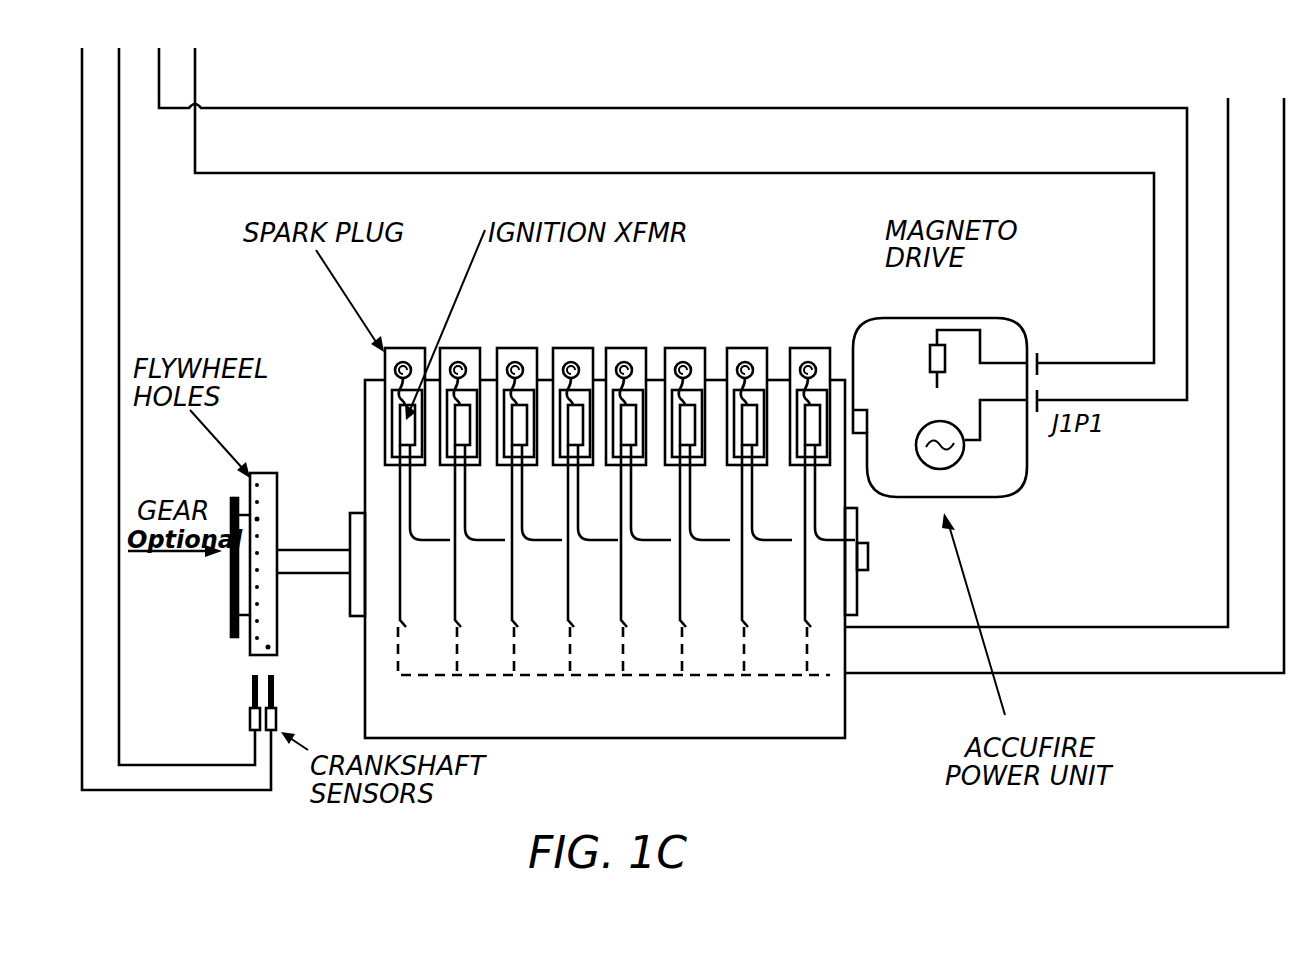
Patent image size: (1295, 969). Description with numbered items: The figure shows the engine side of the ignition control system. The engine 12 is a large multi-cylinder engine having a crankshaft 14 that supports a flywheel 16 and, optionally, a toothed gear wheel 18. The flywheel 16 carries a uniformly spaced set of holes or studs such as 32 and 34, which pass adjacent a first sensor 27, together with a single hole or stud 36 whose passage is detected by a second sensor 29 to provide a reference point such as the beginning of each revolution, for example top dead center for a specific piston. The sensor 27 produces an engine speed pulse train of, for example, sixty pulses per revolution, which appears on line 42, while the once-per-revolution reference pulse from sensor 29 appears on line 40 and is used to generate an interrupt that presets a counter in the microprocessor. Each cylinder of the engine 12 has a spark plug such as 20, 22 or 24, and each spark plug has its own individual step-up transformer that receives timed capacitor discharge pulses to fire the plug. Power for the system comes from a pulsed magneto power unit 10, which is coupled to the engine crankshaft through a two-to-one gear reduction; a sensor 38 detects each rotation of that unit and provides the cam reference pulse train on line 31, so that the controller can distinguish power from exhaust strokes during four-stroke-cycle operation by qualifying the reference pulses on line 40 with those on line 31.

The magneto 10 is at (1008, 470).
The engine 12 is at (705, 733).
The crankshaft 14 is at (288, 557).
The flywheel 16 is at (268, 600).
The toothed gear wheel 18 is at (232, 622).
The spark plug 20 is at (398, 352).
The spark plug 22 is at (511, 352).
The spark plug 24 is at (620, 352).
The first sensor 27 is at (250, 720).
The second sensor 29 is at (277, 718).
The cam reference line 31 is at (195, 152).
The flywheel hole 32 is at (262, 492).
The flywheel hole 34 is at (262, 519).
The single hole 36 is at (268, 648).
The sensor 38 is at (858, 420).
The TDCREF line 40 is at (82, 330).
The engine speed line 42 is at (119, 292).